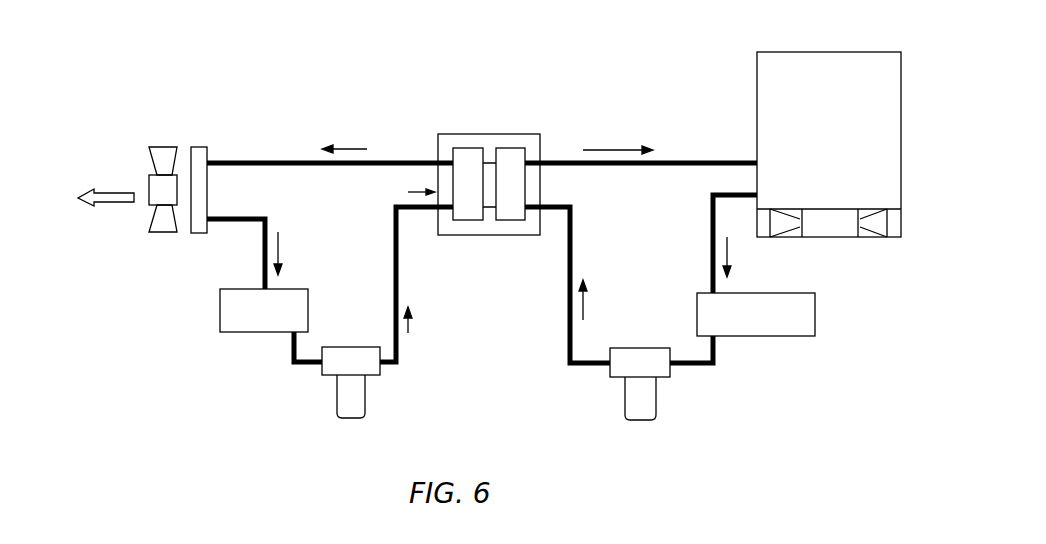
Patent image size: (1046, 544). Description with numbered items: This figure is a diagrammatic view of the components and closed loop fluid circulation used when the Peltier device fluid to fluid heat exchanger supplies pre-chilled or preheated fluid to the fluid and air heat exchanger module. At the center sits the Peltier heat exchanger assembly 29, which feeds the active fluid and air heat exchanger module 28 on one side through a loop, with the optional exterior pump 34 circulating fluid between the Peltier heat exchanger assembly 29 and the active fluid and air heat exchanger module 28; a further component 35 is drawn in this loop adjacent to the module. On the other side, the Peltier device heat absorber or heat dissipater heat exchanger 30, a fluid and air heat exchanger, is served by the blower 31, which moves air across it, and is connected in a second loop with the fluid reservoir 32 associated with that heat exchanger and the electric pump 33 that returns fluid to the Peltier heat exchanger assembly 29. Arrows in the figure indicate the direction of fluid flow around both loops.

The active fluid and air heat exchanger module 28 is at (772, 109).
The Peltier heat exchanger assembly 29 is at (493, 134).
The Peltier device heat absorber or heat dissipater heat exchanger 30 is at (190, 147).
The blower 31 is at (163, 162).
The fluid reservoir associated with Peltier device heat absorber or heat dissipater 32 is at (222, 318).
The electric pump returning fluid to Peltier device heat exchanger assembly 33 is at (333, 402).
The optional exterior pump 34 is at (638, 405).
The pump 35 is at (815, 321).